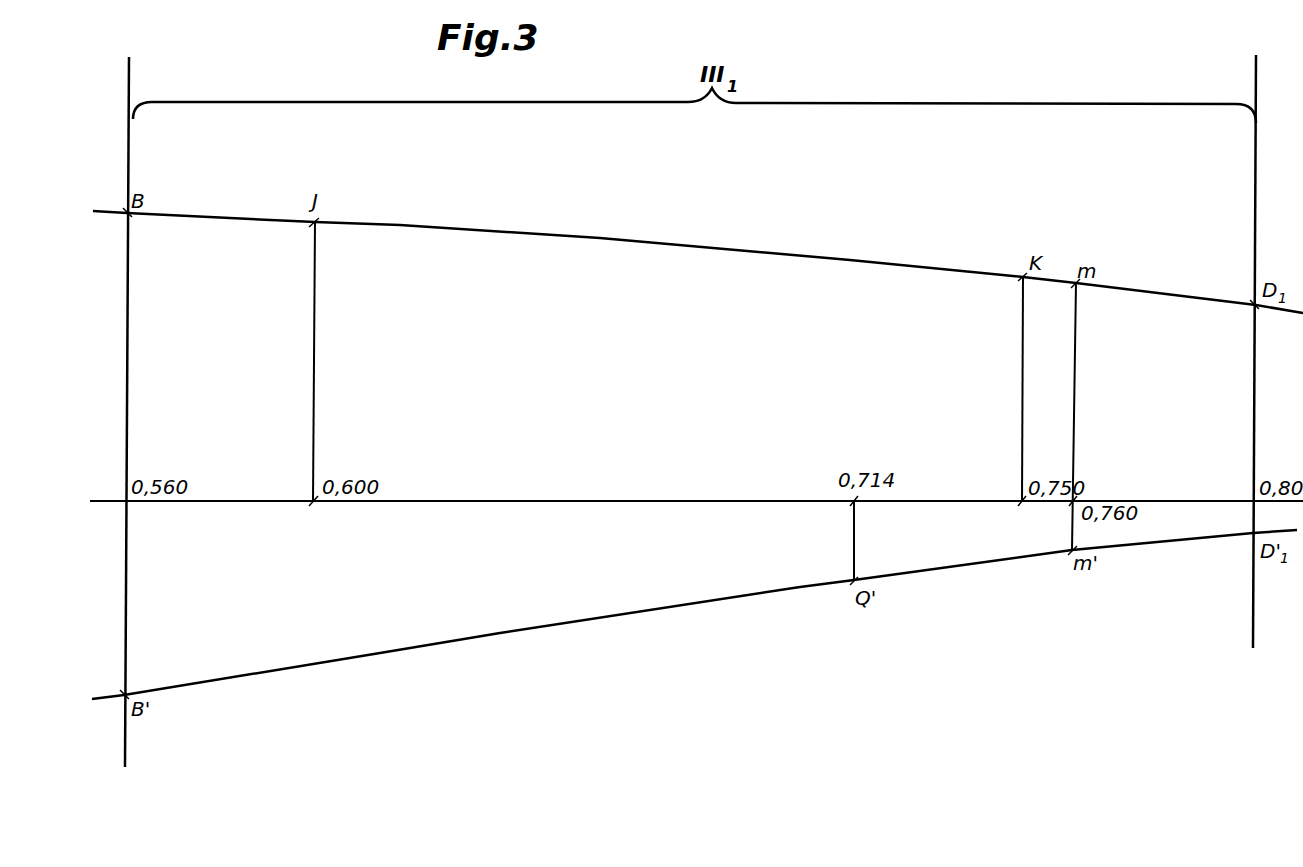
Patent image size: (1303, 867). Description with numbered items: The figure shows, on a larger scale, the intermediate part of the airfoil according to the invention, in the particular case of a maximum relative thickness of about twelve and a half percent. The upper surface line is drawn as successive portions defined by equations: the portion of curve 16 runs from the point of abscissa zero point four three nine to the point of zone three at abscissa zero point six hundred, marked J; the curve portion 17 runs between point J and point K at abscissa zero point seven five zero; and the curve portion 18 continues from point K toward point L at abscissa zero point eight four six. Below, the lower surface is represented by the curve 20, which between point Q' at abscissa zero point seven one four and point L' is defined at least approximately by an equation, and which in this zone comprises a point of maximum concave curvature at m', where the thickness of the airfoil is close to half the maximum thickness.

The portion of curve 16 is at (226, 217).
The curve portion 17 is at (716, 250).
The curve portion 18 is at (1140, 291).
The curve 20 is at (973, 567).